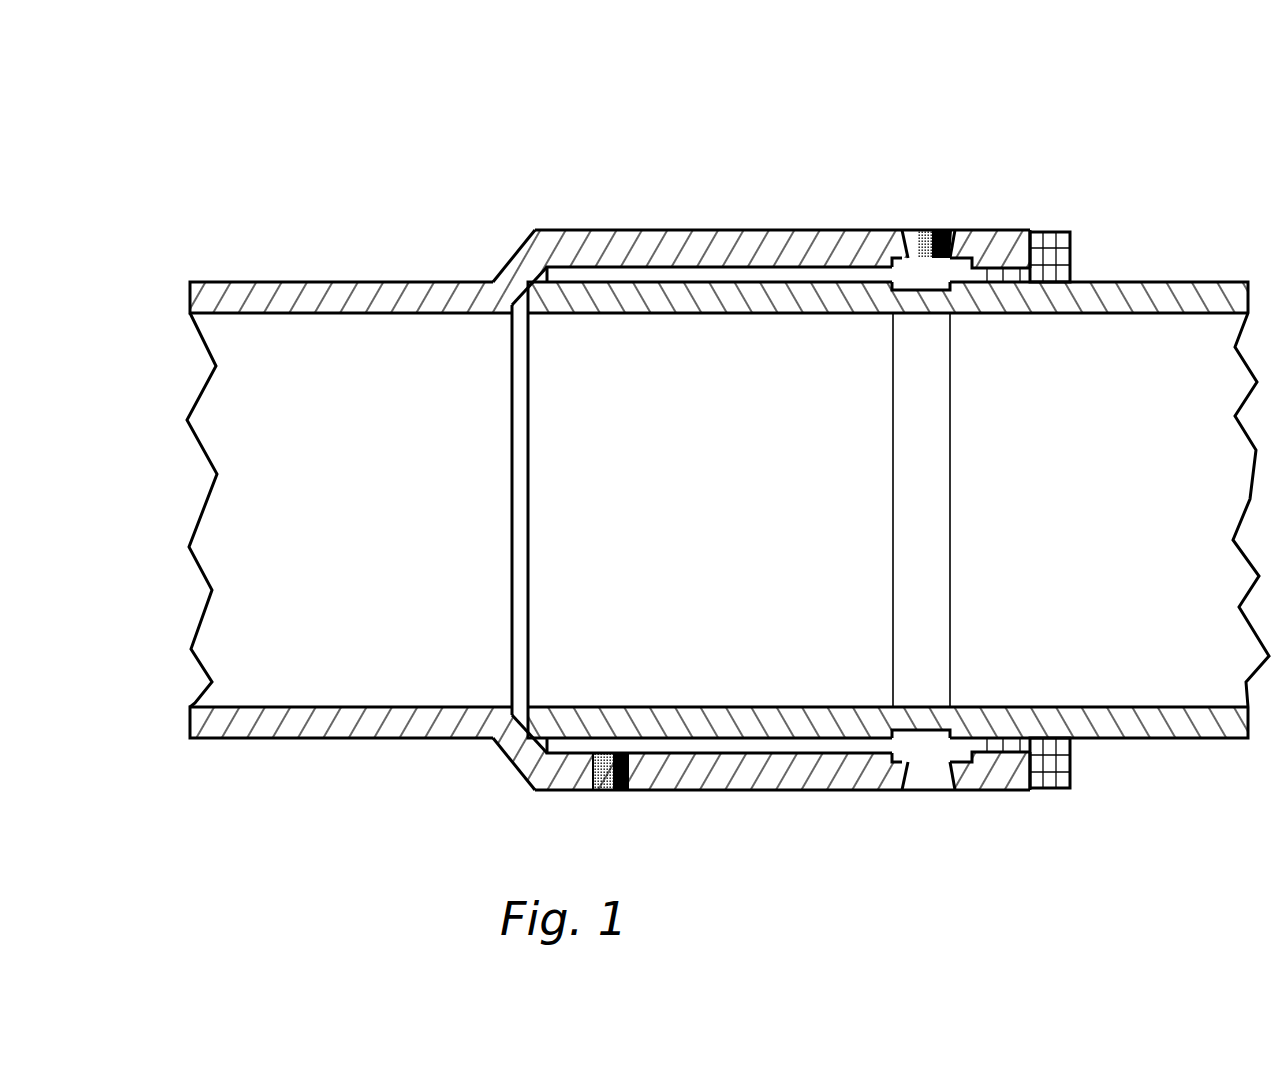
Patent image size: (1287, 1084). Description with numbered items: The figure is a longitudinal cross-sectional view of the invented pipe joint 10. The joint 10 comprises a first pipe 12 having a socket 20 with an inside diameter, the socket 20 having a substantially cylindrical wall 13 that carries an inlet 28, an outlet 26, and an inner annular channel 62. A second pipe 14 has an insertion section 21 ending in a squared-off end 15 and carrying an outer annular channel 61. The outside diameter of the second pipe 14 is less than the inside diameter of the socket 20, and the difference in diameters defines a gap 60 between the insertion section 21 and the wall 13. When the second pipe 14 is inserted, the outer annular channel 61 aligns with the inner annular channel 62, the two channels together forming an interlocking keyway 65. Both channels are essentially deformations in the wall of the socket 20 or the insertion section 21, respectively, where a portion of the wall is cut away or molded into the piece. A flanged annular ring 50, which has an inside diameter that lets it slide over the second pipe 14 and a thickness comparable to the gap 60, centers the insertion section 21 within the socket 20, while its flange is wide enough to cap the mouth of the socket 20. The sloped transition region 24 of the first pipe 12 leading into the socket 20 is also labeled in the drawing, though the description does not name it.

The pipe joint 10 is at (380, 235).
The first pipe 12 is at (337, 717).
The substantially cylindrical wall 13 is at (704, 505).
The second pipe 14 is at (1117, 300).
The squared-off end 15 is at (507, 500).
The socket 20 is at (762, 245).
The insertion section 21 is at (714, 531).
The tapered transition portion 24 is at (517, 752).
The outlet 26 is at (605, 780).
The inlet 28 is at (930, 255).
The flanged annular ring 50 is at (1047, 265).
The gap 60 is at (652, 262).
The outer annular channel 61 is at (914, 283).
The inner annular channel 62 is at (951, 255).
The interlocking keyway 65 is at (926, 612).